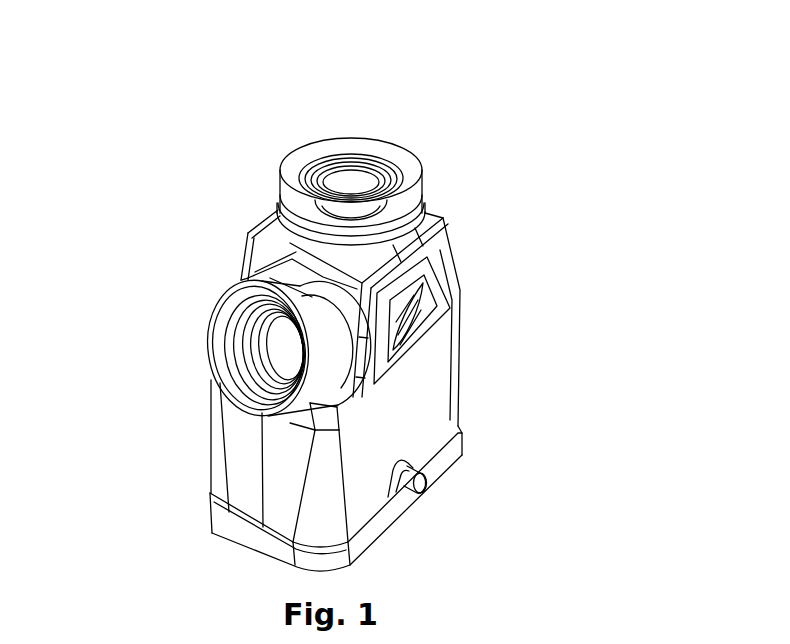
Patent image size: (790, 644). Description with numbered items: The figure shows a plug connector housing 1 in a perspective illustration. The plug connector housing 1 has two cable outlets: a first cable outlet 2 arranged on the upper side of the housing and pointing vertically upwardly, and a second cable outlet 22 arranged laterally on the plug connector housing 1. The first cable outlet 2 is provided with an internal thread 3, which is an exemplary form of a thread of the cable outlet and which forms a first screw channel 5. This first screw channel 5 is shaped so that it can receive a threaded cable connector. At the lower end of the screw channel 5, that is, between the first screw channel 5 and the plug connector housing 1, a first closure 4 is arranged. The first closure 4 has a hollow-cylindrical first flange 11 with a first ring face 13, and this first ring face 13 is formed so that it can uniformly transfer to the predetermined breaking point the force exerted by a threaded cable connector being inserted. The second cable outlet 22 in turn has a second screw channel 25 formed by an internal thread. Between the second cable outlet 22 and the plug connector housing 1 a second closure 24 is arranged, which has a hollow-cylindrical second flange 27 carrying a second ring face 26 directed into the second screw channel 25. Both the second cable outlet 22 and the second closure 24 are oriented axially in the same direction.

The plug connector housing 1 is at (506, 131).
The first cable outlet 2 is at (440, 250).
The internal thread 3 is at (360, 163).
The first closure 4 is at (360, 205).
The first screw channel 5 is at (338, 171).
The first flange 11 is at (330, 202).
The first ring face 13 is at (358, 212).
The second cable outlet 22 is at (278, 267).
The second closure 24 is at (272, 310).
The second screw channel 25 is at (250, 362).
The second ring face 26 is at (360, 402).
The second flange 27 is at (268, 338).